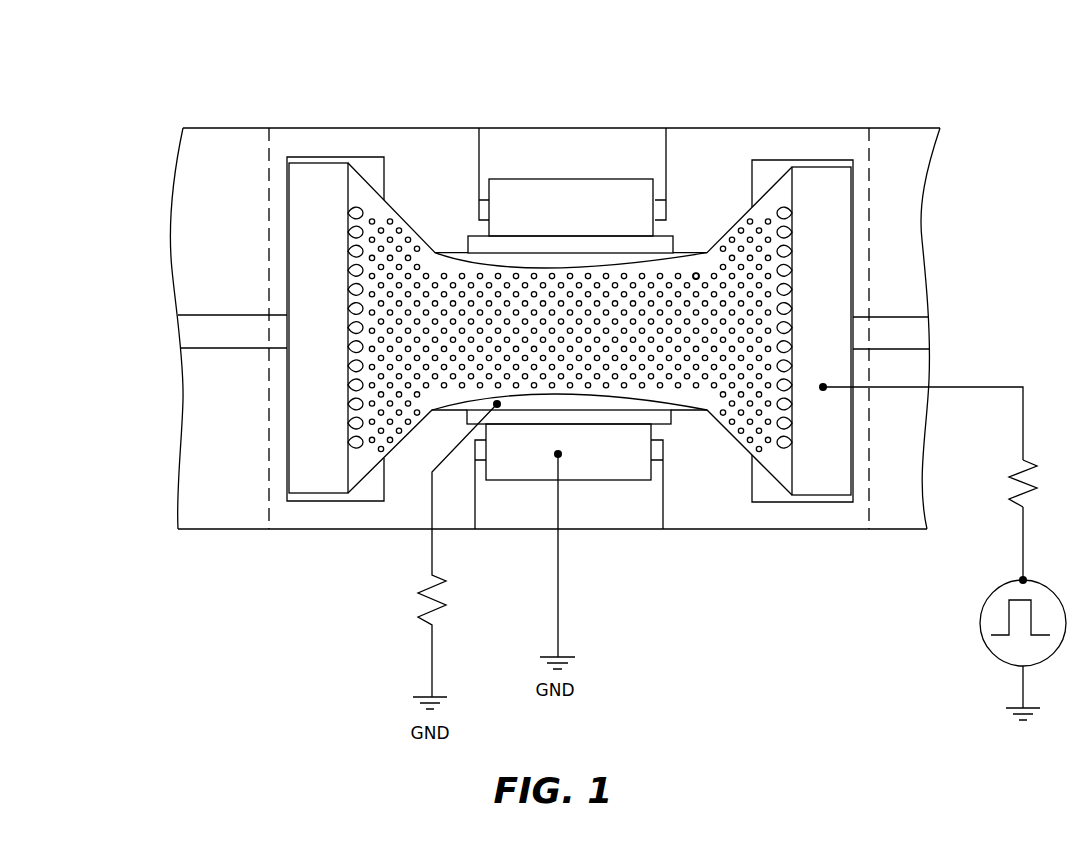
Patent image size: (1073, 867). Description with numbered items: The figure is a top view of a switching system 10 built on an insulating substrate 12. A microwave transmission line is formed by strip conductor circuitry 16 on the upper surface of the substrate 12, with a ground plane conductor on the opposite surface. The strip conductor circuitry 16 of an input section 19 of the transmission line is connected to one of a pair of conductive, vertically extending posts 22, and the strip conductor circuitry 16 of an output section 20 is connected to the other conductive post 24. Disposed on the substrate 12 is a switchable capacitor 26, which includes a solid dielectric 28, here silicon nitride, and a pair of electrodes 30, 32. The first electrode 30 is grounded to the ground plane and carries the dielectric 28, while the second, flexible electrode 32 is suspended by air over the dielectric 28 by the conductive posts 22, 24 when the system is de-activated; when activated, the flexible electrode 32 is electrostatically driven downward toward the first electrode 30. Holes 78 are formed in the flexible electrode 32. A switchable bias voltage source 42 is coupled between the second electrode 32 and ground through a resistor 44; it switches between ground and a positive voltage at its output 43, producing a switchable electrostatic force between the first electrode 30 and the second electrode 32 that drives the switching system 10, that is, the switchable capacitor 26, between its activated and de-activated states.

The switching system 10 is at (868, 101).
The insulating substrate 12 is at (259, 127).
The strip conductor circuitry 16 is at (212, 338).
The input section 19 is at (200, 301).
The output section 20 is at (904, 299).
The conductive vertically extending post 22 is at (304, 401).
The conductive vertically extending post 24 is at (809, 446).
The switchable capacitor 26 is at (448, 302).
The solid dielectric 28 is at (618, 247).
The first electrode 30 is at (561, 218).
The second flexible electrode 32 is at (397, 211).
The holes 78 is at (696, 272).
The bias voltage source 42 is at (980, 617).
The output 43 is at (1021, 577).
The resistor 44 is at (1012, 480).